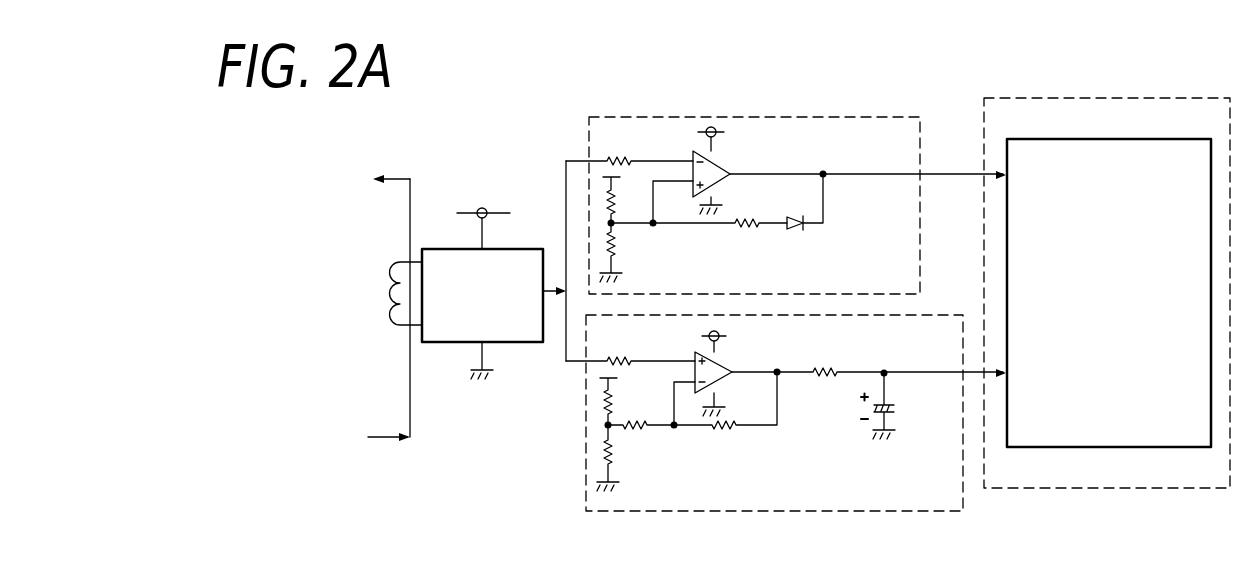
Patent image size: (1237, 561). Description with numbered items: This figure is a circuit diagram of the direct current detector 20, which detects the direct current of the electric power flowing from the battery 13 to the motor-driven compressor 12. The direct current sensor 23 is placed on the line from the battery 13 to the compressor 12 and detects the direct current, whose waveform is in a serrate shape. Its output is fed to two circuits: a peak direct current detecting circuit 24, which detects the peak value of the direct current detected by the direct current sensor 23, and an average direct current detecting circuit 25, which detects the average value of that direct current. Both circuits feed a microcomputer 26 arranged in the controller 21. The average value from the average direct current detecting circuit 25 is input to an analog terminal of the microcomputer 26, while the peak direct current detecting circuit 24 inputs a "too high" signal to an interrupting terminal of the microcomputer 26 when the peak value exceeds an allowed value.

The motor-driven compressor 12 is at (314, 176).
The battery 13 is at (315, 438).
The direct current detector 20 is at (896, 87).
The controller 21 is at (1170, 96).
The direct current sensor 23 is at (537, 247).
The peak direct current detecting circuit 24 is at (921, 138).
The average direct current detecting circuit 25 is at (923, 310).
The microcomputer 26 is at (1157, 141).